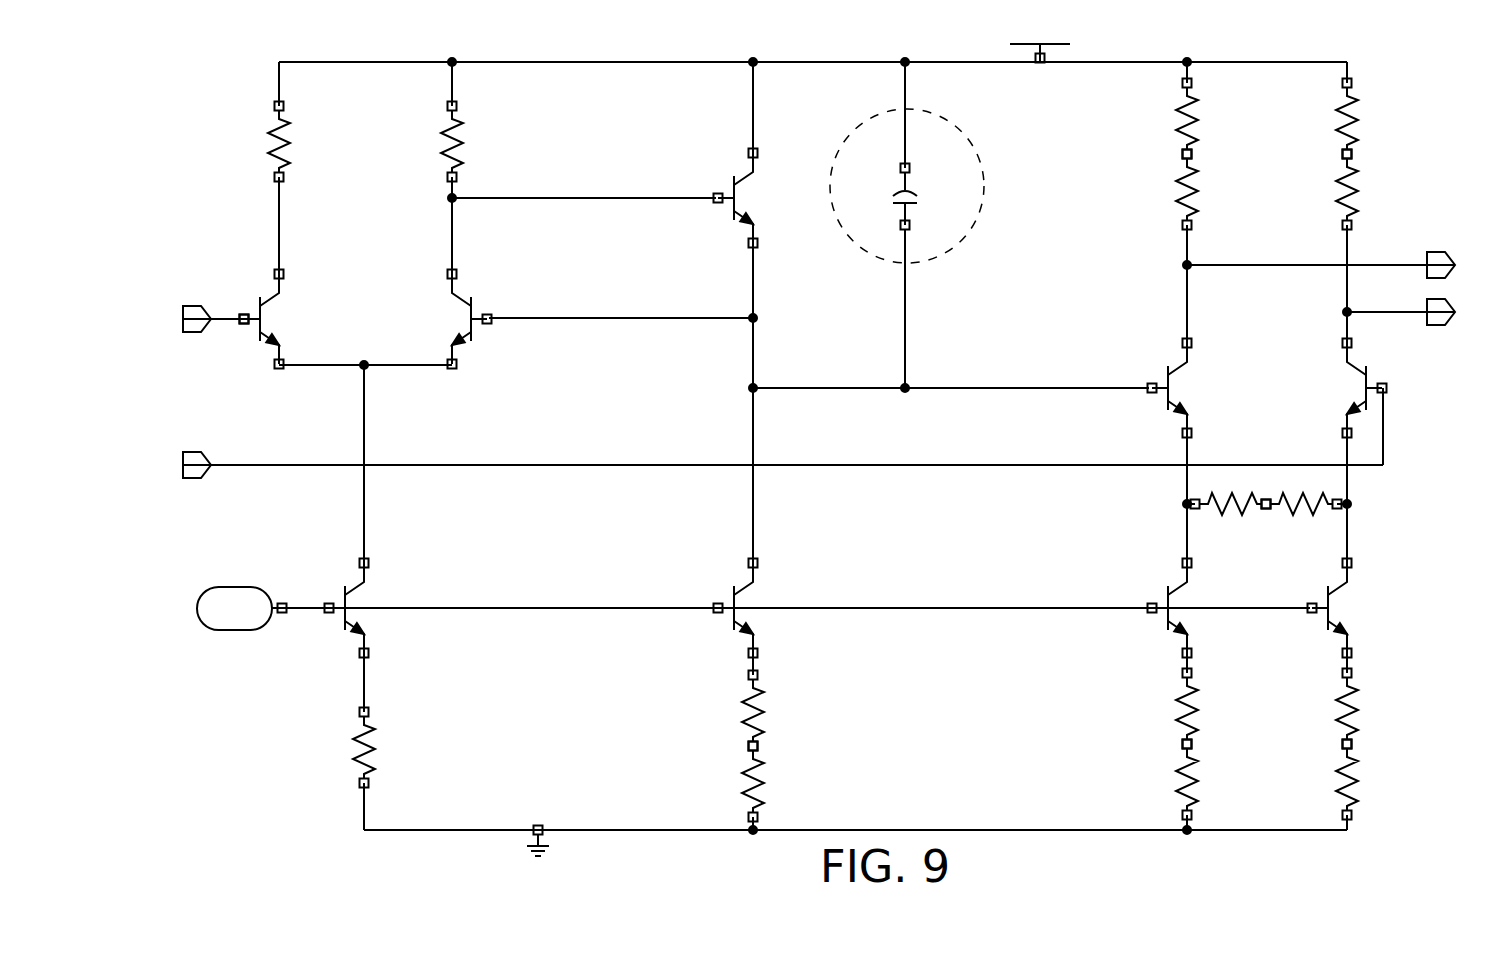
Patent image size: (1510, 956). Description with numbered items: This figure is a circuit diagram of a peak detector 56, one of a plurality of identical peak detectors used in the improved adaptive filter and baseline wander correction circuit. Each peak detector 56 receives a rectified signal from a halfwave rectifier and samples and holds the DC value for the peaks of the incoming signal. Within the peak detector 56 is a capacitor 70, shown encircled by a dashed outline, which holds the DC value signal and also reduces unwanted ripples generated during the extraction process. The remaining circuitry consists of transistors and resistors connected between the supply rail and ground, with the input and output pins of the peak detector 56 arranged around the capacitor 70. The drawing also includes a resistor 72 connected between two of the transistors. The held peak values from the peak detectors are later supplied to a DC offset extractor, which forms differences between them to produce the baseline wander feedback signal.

The peak detector 56 is at (826, 447).
The capacitor 70 is at (965, 238).
The emitter degeneration resistor 72 is at (1267, 496).